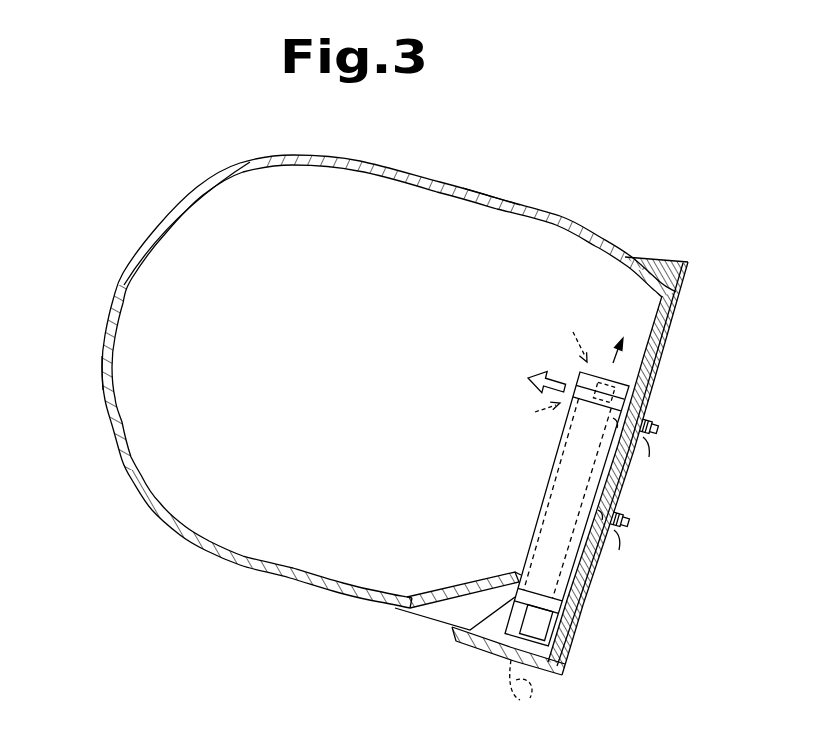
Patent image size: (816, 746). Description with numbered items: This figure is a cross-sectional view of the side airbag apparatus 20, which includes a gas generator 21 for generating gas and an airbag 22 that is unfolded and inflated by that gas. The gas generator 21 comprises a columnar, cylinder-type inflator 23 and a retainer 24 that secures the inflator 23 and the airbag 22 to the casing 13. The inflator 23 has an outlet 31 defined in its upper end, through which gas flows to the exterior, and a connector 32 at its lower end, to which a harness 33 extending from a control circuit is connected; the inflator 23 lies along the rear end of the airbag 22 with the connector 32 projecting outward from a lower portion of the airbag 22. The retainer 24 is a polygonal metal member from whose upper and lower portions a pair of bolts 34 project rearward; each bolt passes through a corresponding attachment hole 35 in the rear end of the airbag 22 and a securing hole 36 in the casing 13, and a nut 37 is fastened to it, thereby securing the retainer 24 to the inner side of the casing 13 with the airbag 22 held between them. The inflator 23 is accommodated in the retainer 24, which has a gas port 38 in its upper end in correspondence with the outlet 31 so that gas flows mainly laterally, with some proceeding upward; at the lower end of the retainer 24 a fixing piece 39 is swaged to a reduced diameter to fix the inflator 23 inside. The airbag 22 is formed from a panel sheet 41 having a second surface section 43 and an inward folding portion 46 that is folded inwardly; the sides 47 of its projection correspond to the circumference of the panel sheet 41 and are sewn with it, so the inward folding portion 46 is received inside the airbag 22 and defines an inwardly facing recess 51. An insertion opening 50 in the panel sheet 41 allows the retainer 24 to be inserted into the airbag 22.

The casing 13 is at (692, 264).
The side airbag apparatus 20 is at (152, 170).
The gas generator 21 is at (478, 461).
The airbag 22 is at (103, 395).
The inflator 23 is at (577, 465).
The retainer 24 is at (555, 488).
The outlet 31 is at (584, 373).
The connector 32 is at (512, 657).
The harness 33 is at (529, 690).
The bolts 34 is at (656, 436).
The attachment holes 35 is at (614, 418).
The securing holes 36 is at (652, 426).
The nut 37 is at (640, 509).
The gas port 38 is at (658, 382).
The fixing piece 39 is at (545, 618).
The panel sheet 41 is at (496, 198).
The second surface section 43 is at (148, 298).
The inward folding portion 46 is at (424, 598).
The sides 47 is at (412, 613).
The insertion opening 50 is at (517, 570).
The recess 51 is at (453, 630).